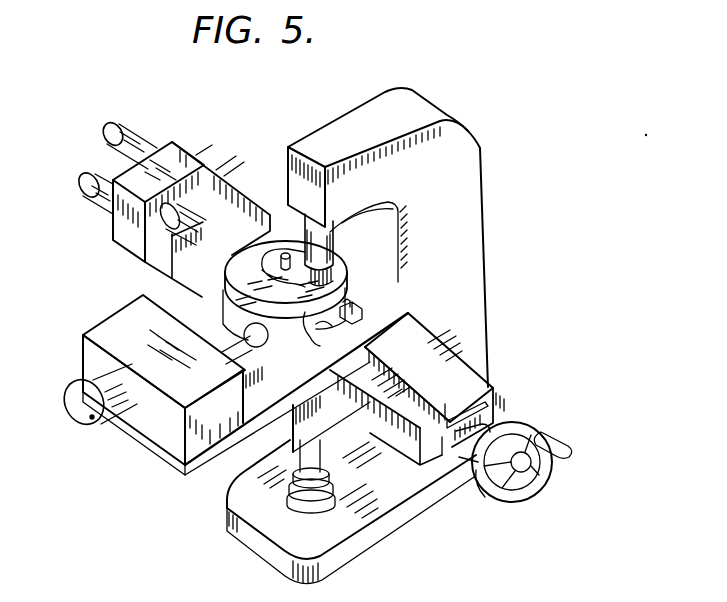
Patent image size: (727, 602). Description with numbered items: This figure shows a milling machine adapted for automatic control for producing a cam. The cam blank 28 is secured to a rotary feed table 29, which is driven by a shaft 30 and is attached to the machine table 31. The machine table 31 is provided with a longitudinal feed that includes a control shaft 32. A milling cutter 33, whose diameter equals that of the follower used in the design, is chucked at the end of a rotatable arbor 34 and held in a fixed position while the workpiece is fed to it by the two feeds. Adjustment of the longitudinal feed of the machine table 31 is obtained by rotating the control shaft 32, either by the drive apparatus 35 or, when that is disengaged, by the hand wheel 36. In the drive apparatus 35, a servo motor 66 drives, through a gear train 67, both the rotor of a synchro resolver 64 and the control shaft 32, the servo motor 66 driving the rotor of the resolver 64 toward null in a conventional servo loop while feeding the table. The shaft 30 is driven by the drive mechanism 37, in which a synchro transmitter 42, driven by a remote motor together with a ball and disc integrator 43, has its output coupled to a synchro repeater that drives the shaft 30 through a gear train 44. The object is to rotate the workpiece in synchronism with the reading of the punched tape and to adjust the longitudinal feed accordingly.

The cam blank 28 is at (228, 258).
The rotary feed table 29 is at (308, 312).
The shaft 30 is at (247, 358).
The machine table 31 is at (427, 347).
The control shaft 32 is at (200, 214).
The milling cutter 33 is at (336, 272).
The rotatable arbor 34 is at (335, 231).
The drive apparatus 35 is at (145, 194).
The hand wheel 36 is at (523, 423).
The drive mechanism 37 is at (123, 412).
The synchro transmitter 42 is at (92, 417).
The ball and disc integrator 43 is at (73, 400).
The gear train 44 is at (125, 318).
The synchro resolver 64 is at (84, 178).
The servo motor 66 is at (118, 127).
The gear train 67 is at (198, 215).